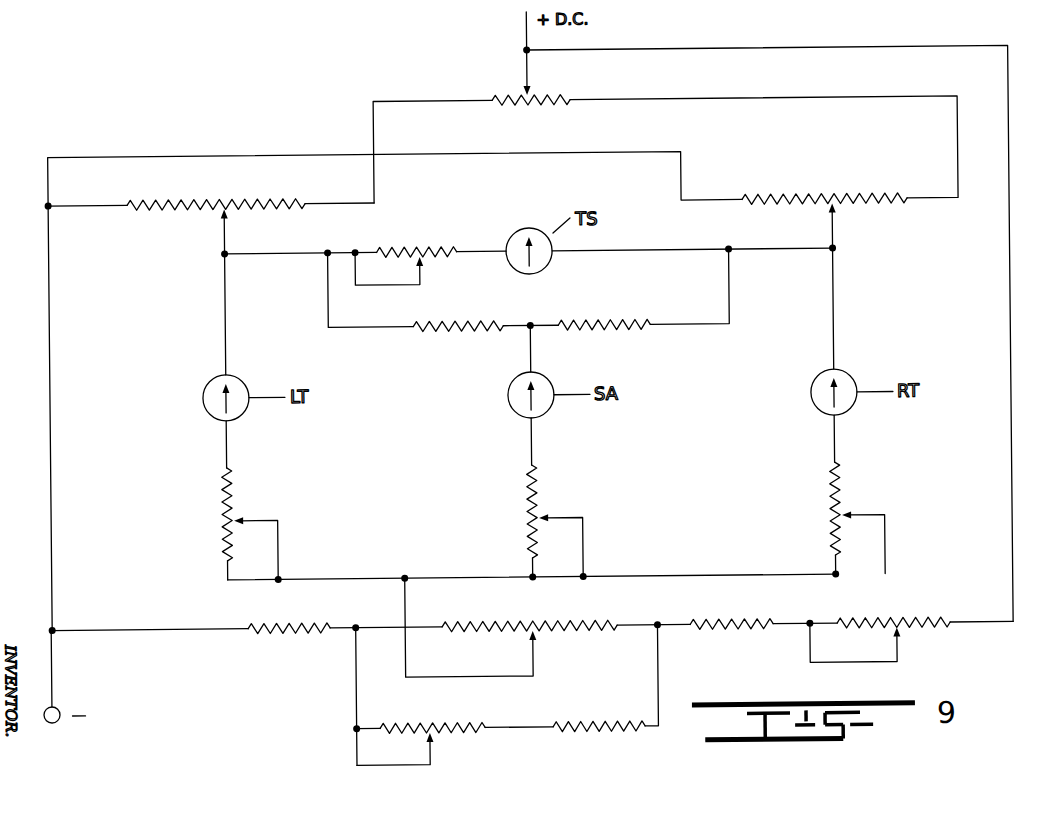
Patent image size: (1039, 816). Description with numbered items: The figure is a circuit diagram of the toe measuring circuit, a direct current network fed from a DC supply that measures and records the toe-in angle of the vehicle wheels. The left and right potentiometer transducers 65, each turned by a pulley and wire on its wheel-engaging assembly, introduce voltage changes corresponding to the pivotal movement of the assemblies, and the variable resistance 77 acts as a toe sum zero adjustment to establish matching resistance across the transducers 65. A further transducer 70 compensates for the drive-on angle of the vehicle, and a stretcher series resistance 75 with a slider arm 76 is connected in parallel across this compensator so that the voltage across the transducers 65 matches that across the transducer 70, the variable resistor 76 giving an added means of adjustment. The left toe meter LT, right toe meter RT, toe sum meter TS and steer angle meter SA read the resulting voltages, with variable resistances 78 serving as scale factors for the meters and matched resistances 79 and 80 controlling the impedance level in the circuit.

The transducer 65 is at (246, 191).
The transducer 70 is at (550, 612).
The stretcher series resistance 75 is at (490, 740).
The slider arm 76 is at (910, 641).
The variable resistance 77 is at (515, 86).
The variable resistances 78 is at (408, 236).
The resistances 79 is at (288, 634).
The resistances 80 is at (459, 322).